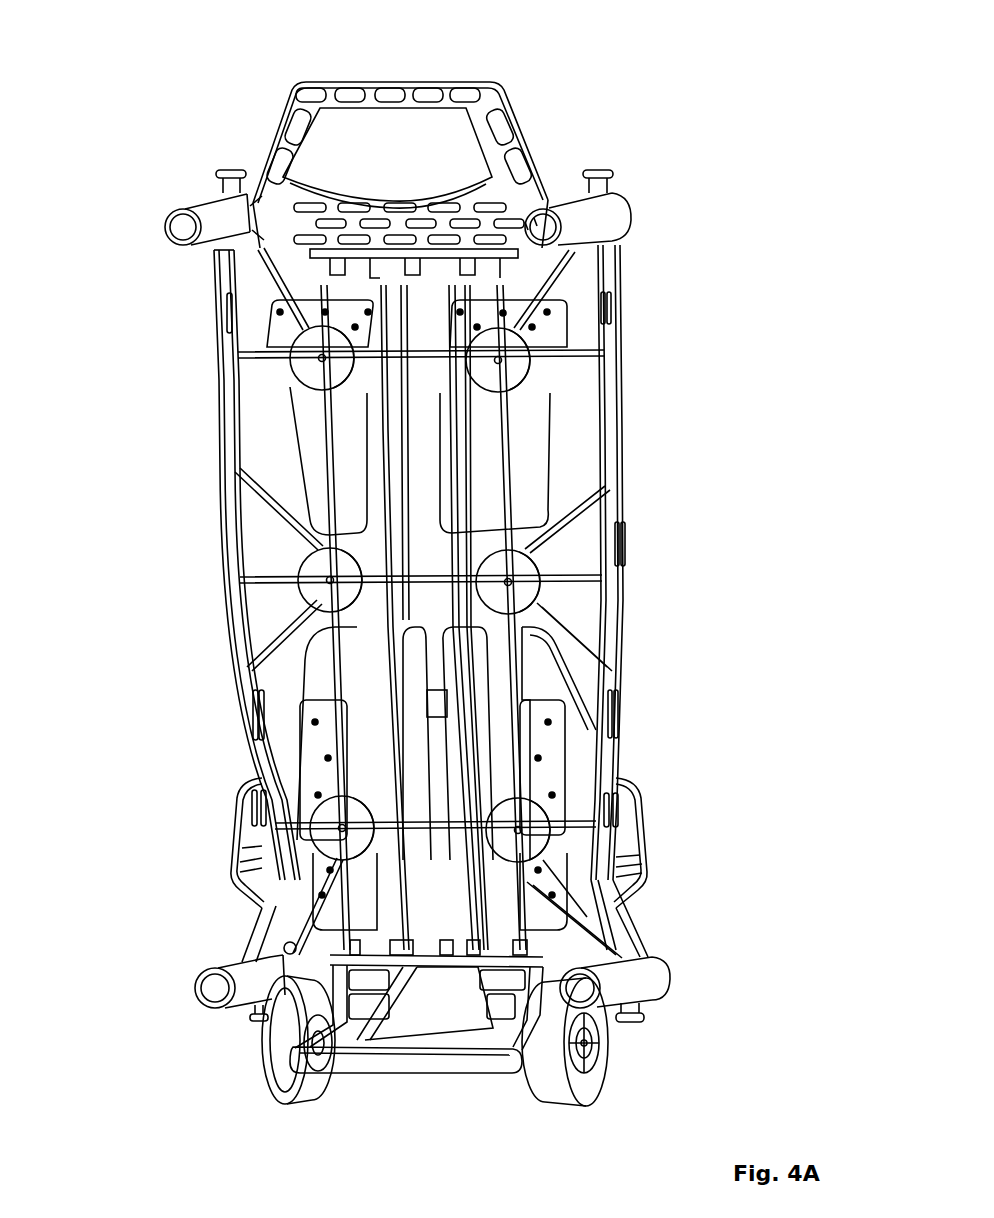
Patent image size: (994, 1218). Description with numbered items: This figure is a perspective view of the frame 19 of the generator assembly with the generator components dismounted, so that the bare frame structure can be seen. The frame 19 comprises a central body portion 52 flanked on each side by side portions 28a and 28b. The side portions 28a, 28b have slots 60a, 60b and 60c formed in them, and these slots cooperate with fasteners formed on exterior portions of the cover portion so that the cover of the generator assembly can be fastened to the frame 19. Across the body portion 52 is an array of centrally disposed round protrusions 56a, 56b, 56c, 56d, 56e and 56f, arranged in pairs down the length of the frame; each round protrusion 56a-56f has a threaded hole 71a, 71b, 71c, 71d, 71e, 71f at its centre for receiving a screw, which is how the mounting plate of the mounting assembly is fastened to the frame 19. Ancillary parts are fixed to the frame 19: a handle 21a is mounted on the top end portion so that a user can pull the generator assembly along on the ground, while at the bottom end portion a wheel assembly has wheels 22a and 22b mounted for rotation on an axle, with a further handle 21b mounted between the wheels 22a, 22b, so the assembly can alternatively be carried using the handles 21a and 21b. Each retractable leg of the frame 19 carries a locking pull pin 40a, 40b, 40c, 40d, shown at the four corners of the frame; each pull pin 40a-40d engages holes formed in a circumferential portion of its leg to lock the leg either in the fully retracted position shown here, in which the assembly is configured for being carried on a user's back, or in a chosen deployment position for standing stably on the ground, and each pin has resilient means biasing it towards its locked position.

The frame 19 is at (646, 485).
The handle 21a is at (409, 82).
The handle 21b is at (390, 1066).
The wheel 22a is at (562, 1095).
The wheel 22b is at (280, 1080).
The side portion 28a is at (224, 420).
The side portion 28b is at (622, 443).
The locking pull pin 40a is at (604, 170).
The locking pull pin 40b is at (224, 172).
The locking pull pin 40c is at (258, 1021).
The locking pull pin 40d is at (643, 1018).
The body portion 52 is at (255, 540).
The round protrusion 56a is at (548, 812).
The round protrusion 56b is at (540, 580).
The round protrusion 56c is at (530, 354).
The round protrusion 56d is at (305, 372).
The round protrusion 56e is at (314, 598).
The round protrusion 56f is at (328, 842).
The slot 60a is at (622, 541).
The slot 60b is at (621, 716).
The slot 60c is at (607, 311).
The threaded hole 71a is at (518, 830).
The threaded hole 71b is at (508, 582).
The threaded hole 71c is at (499, 361).
The threaded hole 71d is at (322, 358).
The threaded hole 71e is at (330, 580).
The threaded hole 71f is at (342, 828).